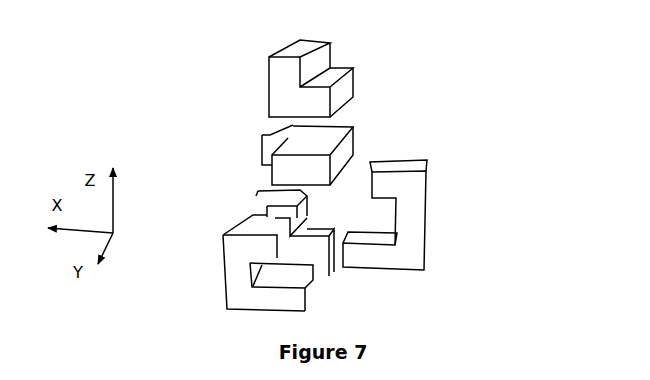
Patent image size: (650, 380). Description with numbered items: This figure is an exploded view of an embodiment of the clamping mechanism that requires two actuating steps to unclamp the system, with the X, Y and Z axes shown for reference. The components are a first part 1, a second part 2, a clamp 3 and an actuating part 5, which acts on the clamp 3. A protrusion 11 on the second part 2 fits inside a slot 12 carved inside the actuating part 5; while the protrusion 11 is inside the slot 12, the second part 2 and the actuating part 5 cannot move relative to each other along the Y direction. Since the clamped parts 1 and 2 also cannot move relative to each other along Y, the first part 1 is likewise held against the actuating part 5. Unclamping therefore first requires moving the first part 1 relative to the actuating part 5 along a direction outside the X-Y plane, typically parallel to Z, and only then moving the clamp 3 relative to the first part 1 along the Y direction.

The first part 1 is at (268, 83).
The second part 2 is at (299, 150).
The clamp 3 is at (424, 227).
The actuating part 5 is at (243, 250).
The protrusion 11 is at (261, 150).
The slot 12 is at (271, 207).